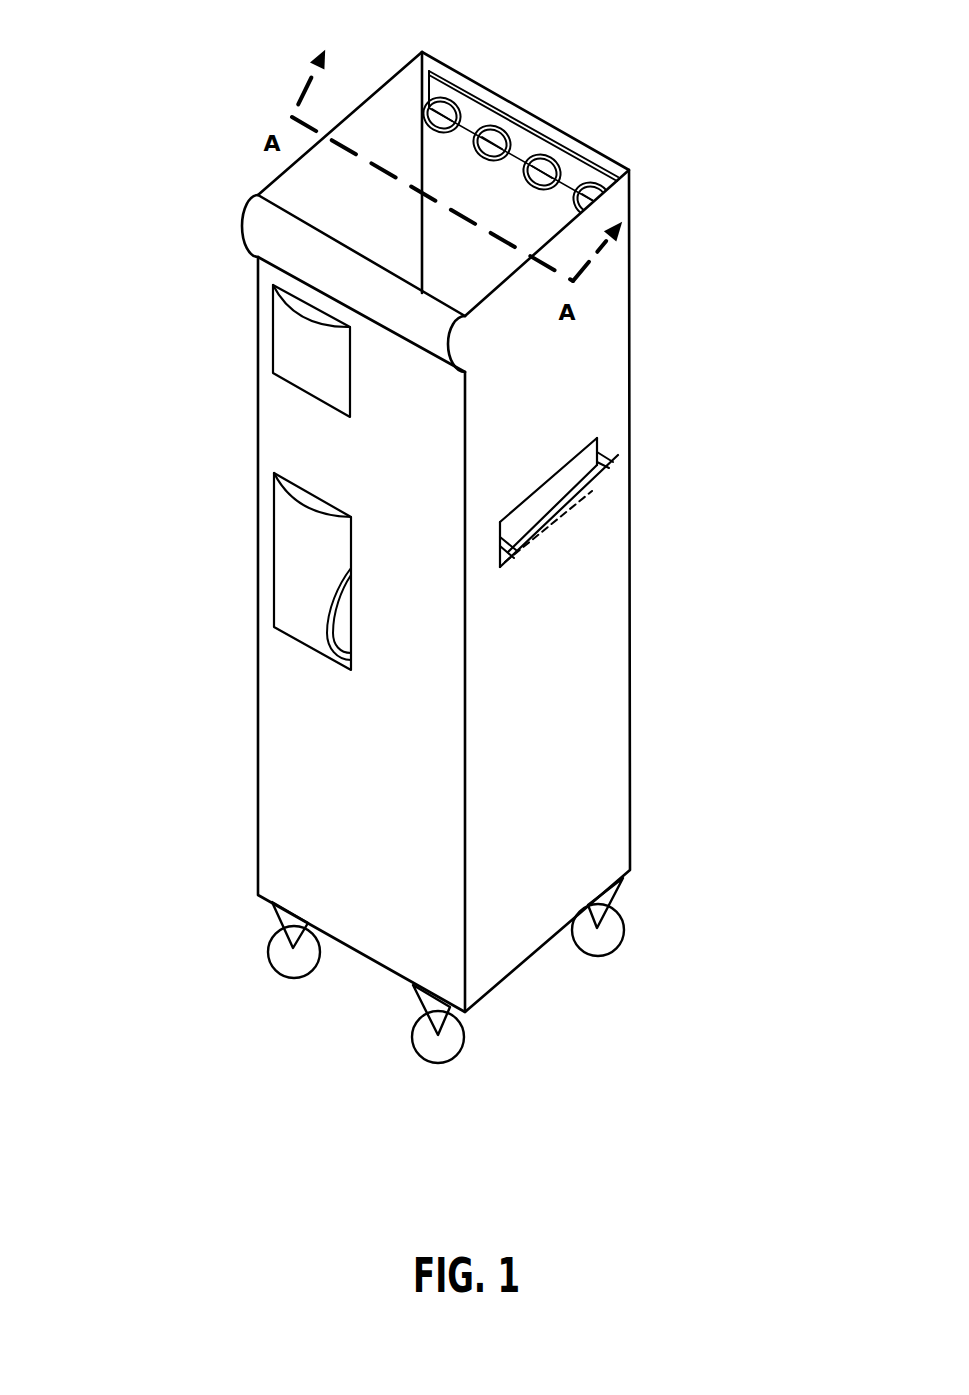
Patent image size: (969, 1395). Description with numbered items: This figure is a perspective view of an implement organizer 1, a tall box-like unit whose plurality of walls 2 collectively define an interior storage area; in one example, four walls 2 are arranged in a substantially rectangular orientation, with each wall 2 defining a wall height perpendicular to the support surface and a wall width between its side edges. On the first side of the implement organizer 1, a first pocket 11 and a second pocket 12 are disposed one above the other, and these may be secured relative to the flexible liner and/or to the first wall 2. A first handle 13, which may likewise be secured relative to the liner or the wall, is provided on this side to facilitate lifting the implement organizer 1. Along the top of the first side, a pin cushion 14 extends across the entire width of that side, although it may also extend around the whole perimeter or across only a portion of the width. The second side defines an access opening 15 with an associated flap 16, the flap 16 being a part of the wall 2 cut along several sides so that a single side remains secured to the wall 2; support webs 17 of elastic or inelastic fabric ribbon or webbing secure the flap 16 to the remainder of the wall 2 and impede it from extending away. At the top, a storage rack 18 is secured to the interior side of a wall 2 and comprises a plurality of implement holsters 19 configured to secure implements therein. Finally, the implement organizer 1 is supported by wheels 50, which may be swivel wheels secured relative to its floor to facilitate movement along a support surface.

The implement organizer 1 is at (110, 71).
The wall 2 is at (448, 532).
The first pocket 11 is at (264, 351).
The second pocket 12 is at (265, 571).
The first handle 13 is at (271, 636).
The pin cushion 14 is at (316, 283).
The access opening 15 is at (543, 493).
The flap 16 is at (624, 526).
The support webs 17 is at (609, 487).
The storage rack 18 is at (565, 110).
The implement holsters 19 is at (517, 121).
The wheels 50 is at (497, 970).